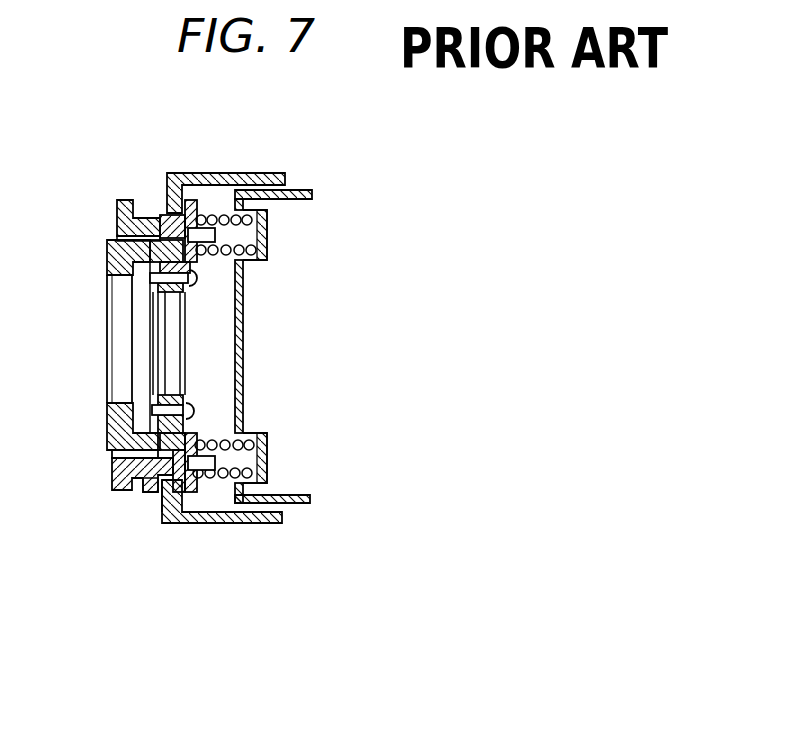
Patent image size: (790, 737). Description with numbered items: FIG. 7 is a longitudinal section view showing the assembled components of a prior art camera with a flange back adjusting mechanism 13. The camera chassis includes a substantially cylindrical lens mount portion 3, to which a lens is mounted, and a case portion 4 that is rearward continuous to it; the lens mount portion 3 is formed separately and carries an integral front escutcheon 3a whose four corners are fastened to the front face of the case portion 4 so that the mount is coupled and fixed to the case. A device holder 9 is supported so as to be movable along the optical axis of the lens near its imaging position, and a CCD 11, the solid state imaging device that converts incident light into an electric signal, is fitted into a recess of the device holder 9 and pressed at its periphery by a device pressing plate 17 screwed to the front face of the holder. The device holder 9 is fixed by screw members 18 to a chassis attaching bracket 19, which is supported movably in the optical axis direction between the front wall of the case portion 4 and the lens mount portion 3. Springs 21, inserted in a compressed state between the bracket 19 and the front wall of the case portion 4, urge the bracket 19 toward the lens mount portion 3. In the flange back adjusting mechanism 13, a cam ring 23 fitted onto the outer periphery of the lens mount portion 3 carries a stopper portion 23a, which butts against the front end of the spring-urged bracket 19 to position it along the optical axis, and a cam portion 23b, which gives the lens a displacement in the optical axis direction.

The lens mount portion 3 is at (108, 432).
The front escutcheon 3a is at (170, 515).
The case portion 4 is at (243, 417).
The device holder 9 is at (172, 345).
The CCD 11 is at (155, 328).
The flange back adjusting mechanism 13 is at (117, 495).
The device pressing plate 17 is at (198, 278).
The screw members 18 is at (197, 411).
The chassis attaching bracket 19 is at (200, 262).
The springs 21 is at (238, 182).
The cam ring 23 is at (112, 476).
The stopper portion 23a is at (152, 483).
The cam portion 23b is at (152, 222).